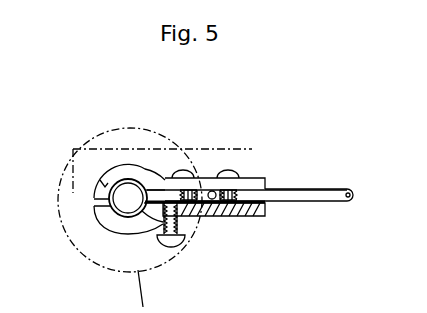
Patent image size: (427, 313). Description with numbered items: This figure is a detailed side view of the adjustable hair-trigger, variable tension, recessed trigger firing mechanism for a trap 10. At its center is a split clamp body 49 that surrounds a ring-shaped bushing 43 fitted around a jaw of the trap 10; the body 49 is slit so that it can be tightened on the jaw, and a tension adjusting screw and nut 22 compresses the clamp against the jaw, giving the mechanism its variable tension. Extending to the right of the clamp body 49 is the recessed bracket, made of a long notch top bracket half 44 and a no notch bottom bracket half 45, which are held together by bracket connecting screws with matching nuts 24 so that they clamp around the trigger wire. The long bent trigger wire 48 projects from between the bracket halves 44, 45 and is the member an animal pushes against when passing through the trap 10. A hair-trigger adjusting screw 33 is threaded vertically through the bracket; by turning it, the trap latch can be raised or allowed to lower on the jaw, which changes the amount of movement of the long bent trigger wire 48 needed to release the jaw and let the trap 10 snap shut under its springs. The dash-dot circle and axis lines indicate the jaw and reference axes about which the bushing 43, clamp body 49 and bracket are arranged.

The trap 10 is at (112, 187).
The clamp body 49 is at (128, 165).
The bushing ring 43 is at (147, 188).
The long notch top bracket half 44 is at (255, 177).
The tension adjusting screw and nut 22 is at (180, 178).
The bracket connecting screws with matching nuts 24 is at (228, 178).
The long bent trigger wire 48 is at (315, 202).
The no notch bottom bracket half 45 is at (243, 215).
The hair-trigger adjusting screw 33 is at (183, 246).